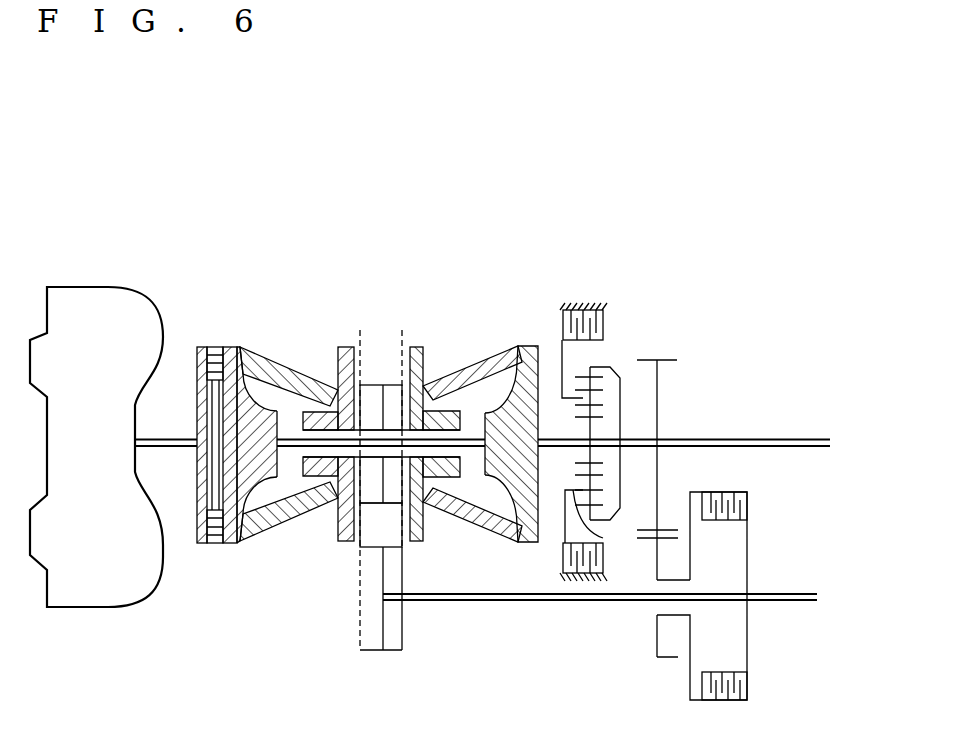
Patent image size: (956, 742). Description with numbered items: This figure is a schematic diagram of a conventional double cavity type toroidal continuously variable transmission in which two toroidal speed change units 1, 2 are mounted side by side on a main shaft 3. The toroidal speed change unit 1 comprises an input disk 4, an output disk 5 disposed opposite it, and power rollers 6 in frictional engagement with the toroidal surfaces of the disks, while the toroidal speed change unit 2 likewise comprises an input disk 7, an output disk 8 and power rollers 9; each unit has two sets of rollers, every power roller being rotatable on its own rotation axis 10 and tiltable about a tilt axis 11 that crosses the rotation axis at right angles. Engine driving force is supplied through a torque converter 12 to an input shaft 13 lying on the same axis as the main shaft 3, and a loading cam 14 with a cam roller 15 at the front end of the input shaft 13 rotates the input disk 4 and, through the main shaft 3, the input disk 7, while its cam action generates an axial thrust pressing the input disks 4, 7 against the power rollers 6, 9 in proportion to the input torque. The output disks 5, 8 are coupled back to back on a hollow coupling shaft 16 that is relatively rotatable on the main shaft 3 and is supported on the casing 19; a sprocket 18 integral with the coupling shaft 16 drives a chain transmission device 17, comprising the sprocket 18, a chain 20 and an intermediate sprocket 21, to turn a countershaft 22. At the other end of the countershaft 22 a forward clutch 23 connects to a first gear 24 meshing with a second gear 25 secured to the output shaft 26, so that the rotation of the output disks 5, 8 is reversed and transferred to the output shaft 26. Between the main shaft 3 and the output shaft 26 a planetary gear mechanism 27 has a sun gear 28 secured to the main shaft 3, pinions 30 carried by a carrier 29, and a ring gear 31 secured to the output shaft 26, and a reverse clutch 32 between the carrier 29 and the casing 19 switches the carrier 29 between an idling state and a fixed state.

The toroidal speed change unit 1 is at (371, 409).
The toroidal speed change unit 2 is at (478, 418).
The main shaft 3 is at (338, 447).
The input disk 4 is at (232, 360).
The output disk 5 is at (347, 350).
The power rollers 6 is at (308, 372).
The input disk 7 is at (532, 347).
The output disk 8 is at (417, 347).
The power rollers 9 is at (500, 352).
The rotation axis 10 is at (290, 352).
The tilt axis 11 is at (269, 397).
The torque converter 12 is at (95, 318).
The input shaft 13 is at (158, 439).
The loading cam 14 is at (200, 360).
The cam roller 15 is at (217, 530).
The coupling shaft 16 is at (402, 385).
The chain transmission device 17 is at (357, 618).
The sprocket 18 is at (371, 383).
The casing 19 is at (602, 300).
The chain 20 is at (362, 545).
The intermediate sprocket 21 is at (392, 652).
The countershaft 22 is at (547, 602).
The forward clutch 23 is at (749, 679).
The first gear 24 is at (655, 657).
The second gear 25 is at (675, 358).
The output shaft 26 is at (748, 437).
The planetary gear mechanism 27 is at (640, 356).
The sun gear 28 is at (578, 463).
The carrier 29 is at (557, 355).
The pinions 30 is at (603, 549).
The ring gear 31 is at (578, 370).
The reverse clutch 32 is at (608, 306).